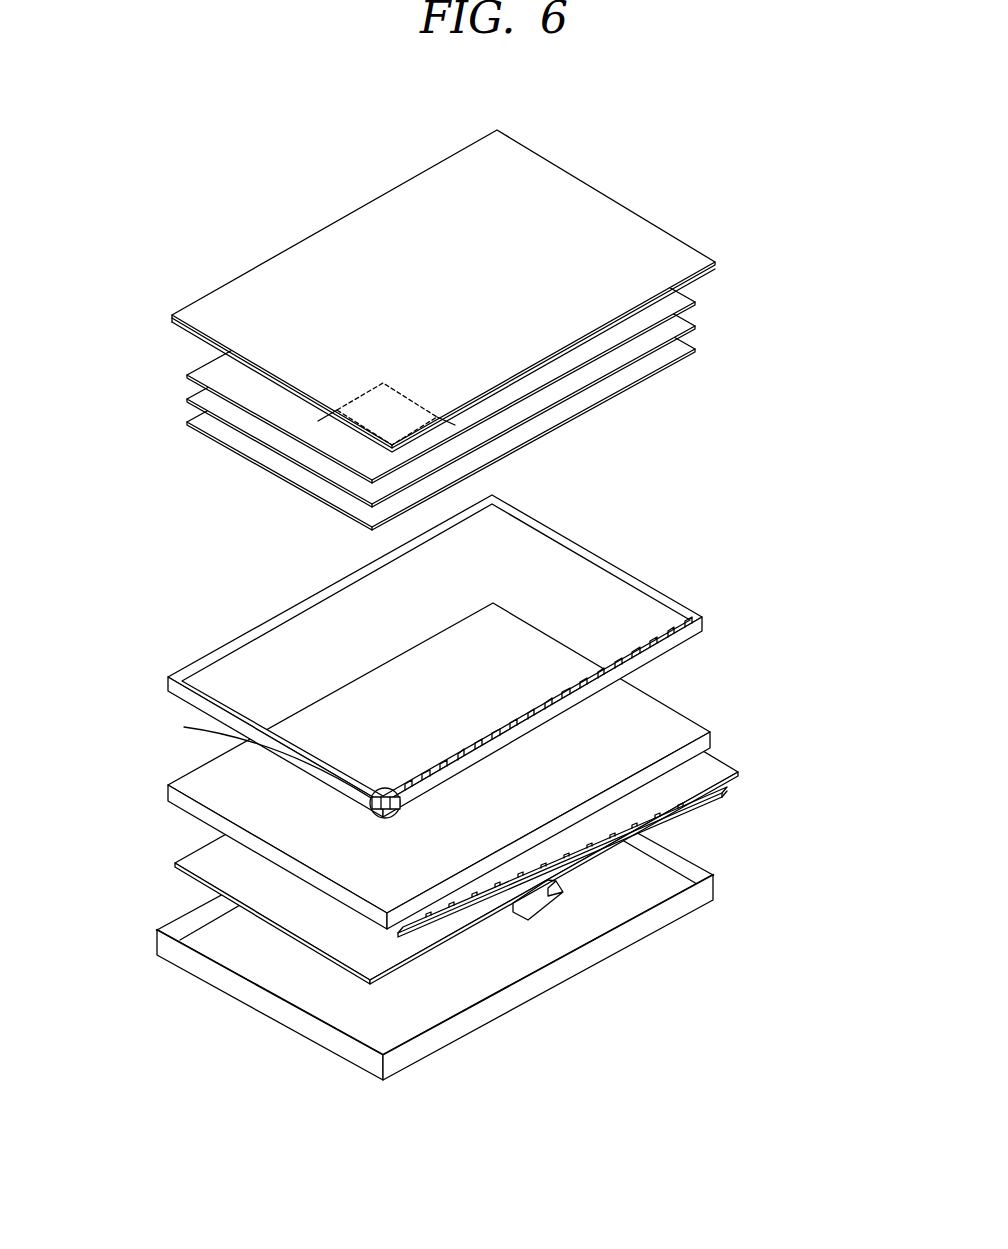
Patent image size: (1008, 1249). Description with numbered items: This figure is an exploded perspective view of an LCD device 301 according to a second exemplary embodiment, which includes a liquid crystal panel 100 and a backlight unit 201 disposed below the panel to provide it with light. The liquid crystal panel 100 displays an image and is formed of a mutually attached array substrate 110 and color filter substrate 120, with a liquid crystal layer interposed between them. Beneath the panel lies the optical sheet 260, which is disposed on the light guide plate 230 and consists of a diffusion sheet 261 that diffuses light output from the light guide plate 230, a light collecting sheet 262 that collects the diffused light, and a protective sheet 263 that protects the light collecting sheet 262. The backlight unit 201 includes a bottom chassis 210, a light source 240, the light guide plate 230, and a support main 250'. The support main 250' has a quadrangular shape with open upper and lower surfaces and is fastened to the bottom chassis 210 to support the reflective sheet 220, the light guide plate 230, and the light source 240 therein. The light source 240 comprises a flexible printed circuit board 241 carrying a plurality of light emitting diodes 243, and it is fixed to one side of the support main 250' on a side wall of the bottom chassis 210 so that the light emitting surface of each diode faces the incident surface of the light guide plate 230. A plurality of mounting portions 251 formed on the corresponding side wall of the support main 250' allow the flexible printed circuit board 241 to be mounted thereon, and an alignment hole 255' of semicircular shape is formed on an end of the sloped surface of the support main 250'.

The LCD device 301 is at (757, 140).
The liquid crystal panel 100 is at (499, 291).
The color filter substrate 120 is at (716, 261).
The array substrate 110 is at (712, 268).
The backlight unit 201 is at (828, 930).
The optical sheet 260 is at (378, 363).
The protective sheet 263 is at (205, 362).
The light collecting sheet 262 is at (212, 389).
The diffusion sheet 261 is at (215, 416).
The support main 250' is at (442, 656).
The mounting portions 251 is at (642, 645).
The alignment hole 255' is at (272, 764).
The light guide plate 230 is at (713, 737).
The reflective sheet 220 is at (205, 857).
The light source 240 is at (562, 917).
The flexible printed circuit board 241 is at (553, 863).
The light emitting diodes 243 is at (505, 915).
The bottom chassis 210 is at (437, 1042).